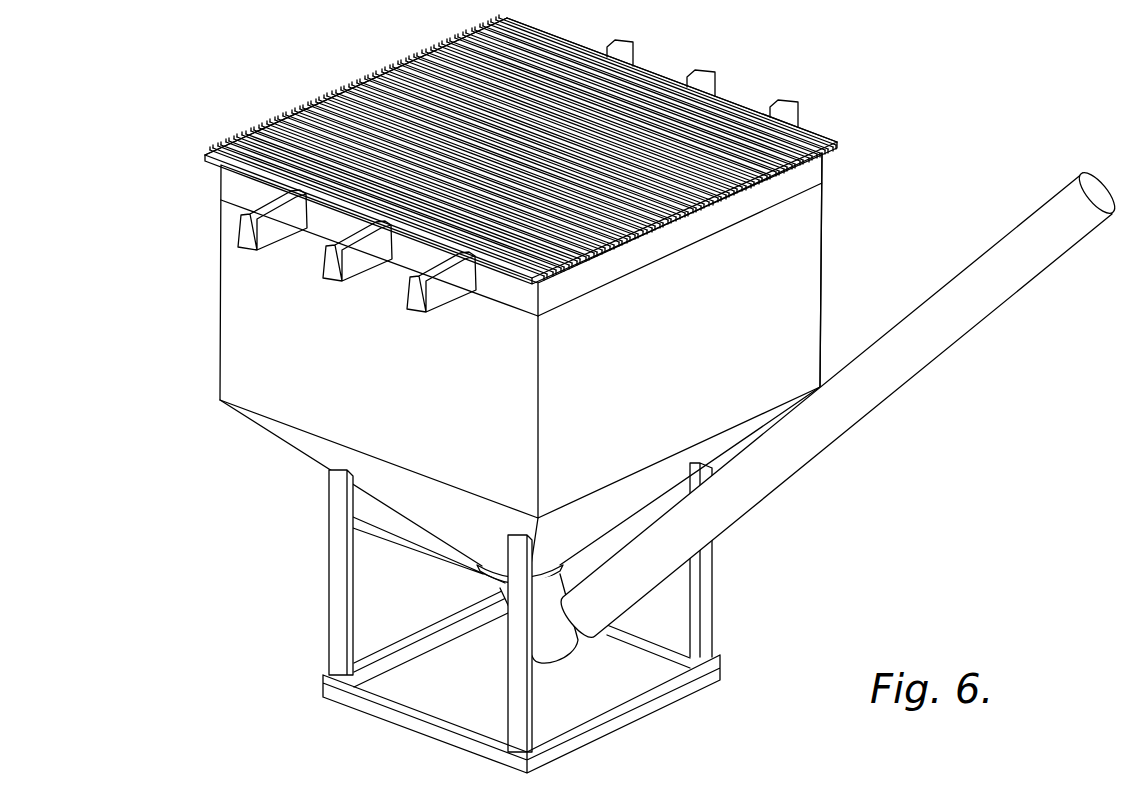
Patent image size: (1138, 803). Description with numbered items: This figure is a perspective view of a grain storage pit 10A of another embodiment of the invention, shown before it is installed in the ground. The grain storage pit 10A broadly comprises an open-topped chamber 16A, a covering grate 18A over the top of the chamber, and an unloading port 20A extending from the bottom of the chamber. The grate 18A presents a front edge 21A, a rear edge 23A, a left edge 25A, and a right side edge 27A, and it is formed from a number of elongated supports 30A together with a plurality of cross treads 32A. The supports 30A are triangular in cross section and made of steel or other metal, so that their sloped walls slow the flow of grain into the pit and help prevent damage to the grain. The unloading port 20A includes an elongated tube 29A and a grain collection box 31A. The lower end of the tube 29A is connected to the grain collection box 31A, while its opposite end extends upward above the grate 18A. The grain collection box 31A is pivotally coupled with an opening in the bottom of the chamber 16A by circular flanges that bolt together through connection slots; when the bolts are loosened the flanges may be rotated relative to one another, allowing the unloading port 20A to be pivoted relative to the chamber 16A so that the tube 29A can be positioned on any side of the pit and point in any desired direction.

The grain storage pit 10A is at (183, 218).
The open-topped chamber 16A is at (810, 223).
The covering grate 18A is at (383, 68).
The unloading port 20A is at (841, 402).
The front edge 21A is at (663, 230).
The rear edge 23A is at (258, 123).
The left edge 25A is at (418, 242).
The right side edge 27A is at (748, 97).
The elongated tube 29A is at (848, 413).
The elongated supports 30A is at (250, 247).
The grain collection box 31A is at (567, 648).
The cross treads 32A is at (512, 57).